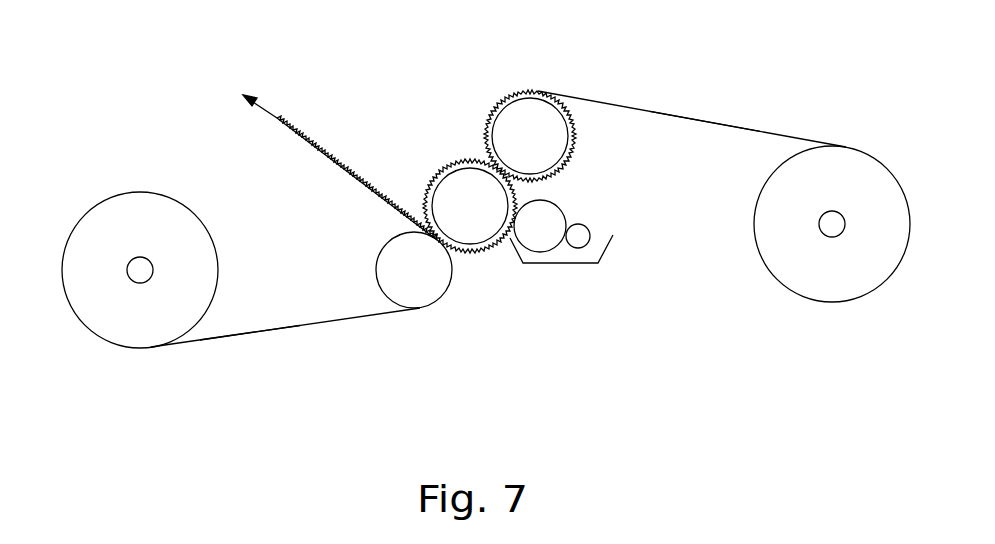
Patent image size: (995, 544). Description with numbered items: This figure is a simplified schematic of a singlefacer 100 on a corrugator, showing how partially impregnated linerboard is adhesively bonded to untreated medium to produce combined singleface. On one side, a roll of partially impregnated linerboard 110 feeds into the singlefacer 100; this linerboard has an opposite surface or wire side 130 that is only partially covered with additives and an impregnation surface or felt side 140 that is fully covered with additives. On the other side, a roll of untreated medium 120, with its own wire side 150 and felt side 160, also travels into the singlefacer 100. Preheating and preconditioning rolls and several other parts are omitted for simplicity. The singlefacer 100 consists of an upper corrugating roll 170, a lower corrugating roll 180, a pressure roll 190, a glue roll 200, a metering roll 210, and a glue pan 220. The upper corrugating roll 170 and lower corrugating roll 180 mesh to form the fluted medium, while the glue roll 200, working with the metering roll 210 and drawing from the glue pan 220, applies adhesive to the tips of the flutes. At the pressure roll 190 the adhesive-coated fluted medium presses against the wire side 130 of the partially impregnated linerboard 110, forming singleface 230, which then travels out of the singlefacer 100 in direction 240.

The singlefacer 100 is at (487, 303).
The partially impregnated linerboard 110 is at (138, 193).
The untreated medium 120 is at (793, 263).
The opposite surface (wire side) 130 is at (272, 332).
The impregnation surface (felt side) 140 is at (308, 322).
The wire side 150 is at (768, 130).
The felt side 160 is at (693, 118).
The upper corrugating roll 170 is at (518, 115).
The lower corrugating roll 180 is at (463, 180).
The pressure roll 190 is at (391, 253).
The glue roll 200 is at (548, 217).
The metering roll 210 is at (583, 233).
The glue pan 220 is at (603, 257).
The singleface 230 is at (329, 156).
The direction 240 is at (260, 104).